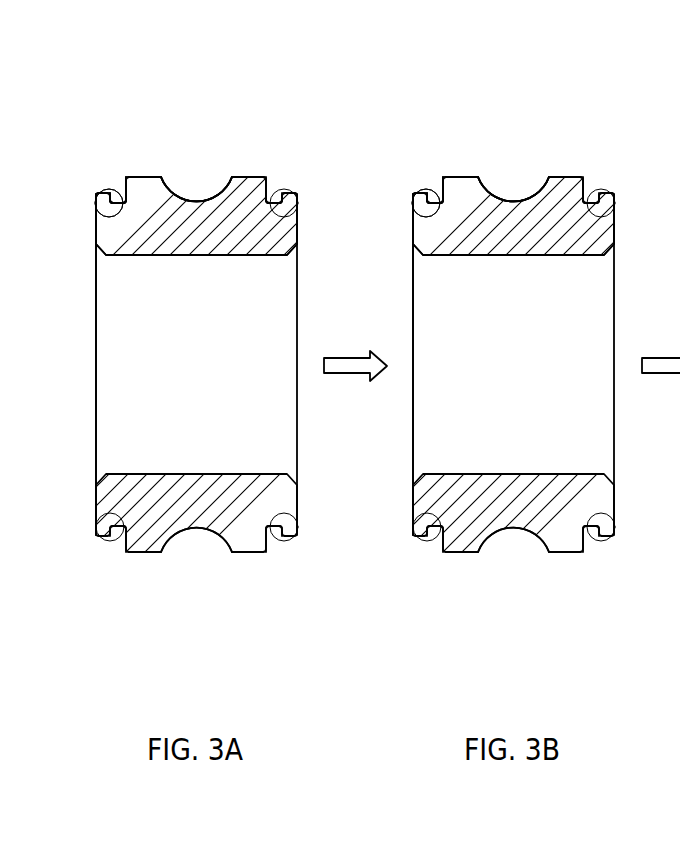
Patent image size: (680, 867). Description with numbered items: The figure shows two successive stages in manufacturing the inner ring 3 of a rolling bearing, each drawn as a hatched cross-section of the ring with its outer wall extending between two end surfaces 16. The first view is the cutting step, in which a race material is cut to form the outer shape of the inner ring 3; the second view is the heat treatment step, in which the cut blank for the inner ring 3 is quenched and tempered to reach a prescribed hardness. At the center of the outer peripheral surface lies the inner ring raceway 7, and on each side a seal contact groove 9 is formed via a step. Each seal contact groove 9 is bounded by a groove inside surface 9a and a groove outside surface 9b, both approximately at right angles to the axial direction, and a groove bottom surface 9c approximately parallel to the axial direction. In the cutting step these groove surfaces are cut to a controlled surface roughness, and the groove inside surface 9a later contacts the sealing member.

In FIG. 3A, the inner ring 3 is at (221, 227).
In FIG. 3B, the inner ring 3 is at (538, 227).
In FIG. 3A, the inner ring raceway 7 is at (196, 158).
In FIG. 3B, the inner ring raceway 7 is at (513, 158).
In FIG. 3A, the seal contact groove 9 is at (114, 119).
In FIG. 3B, the seal contact groove 9 is at (549, 292).
In FIG. 3A, the groove inside surface 9a is at (145, 140).
In FIG. 3B, the groove inside surface 9a is at (462, 140).
In FIG. 3A, the groove outside surface 9b is at (94, 153).
In FIG. 3B, the groove outside surface 9b is at (411, 153).
In FIG. 3A, the groove bottom surface 9c is at (77, 190).
In FIG. 3B, the groove bottom surface 9c is at (394, 190).
In FIG. 3A, the end surface 16 is at (64, 364).
In FIG. 3B, the end surface 16 is at (515, 364).